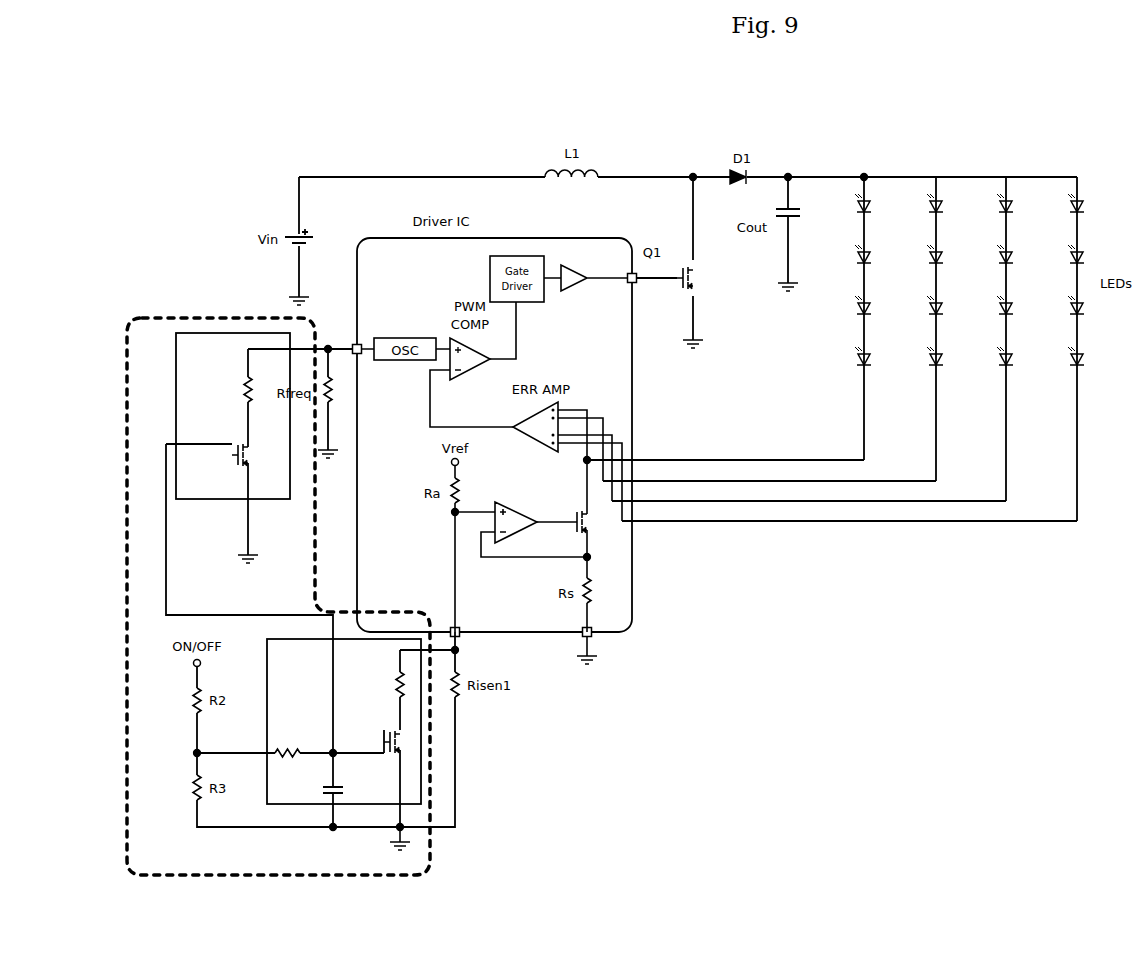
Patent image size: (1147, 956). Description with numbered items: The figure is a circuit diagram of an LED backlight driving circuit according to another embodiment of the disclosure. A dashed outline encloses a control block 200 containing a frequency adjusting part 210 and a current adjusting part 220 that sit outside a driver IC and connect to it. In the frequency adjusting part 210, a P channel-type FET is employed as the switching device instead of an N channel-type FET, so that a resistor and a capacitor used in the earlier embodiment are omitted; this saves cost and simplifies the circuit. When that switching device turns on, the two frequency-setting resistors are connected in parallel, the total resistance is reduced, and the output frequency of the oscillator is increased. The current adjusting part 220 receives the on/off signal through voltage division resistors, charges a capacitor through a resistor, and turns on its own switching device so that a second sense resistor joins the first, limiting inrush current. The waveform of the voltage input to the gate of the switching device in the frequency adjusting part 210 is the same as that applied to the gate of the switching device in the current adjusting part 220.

The dimming control circuit 200 is at (184, 318).
The frequency adjusting part 210 is at (200, 500).
The current sensing control unit 220 is at (422, 775).